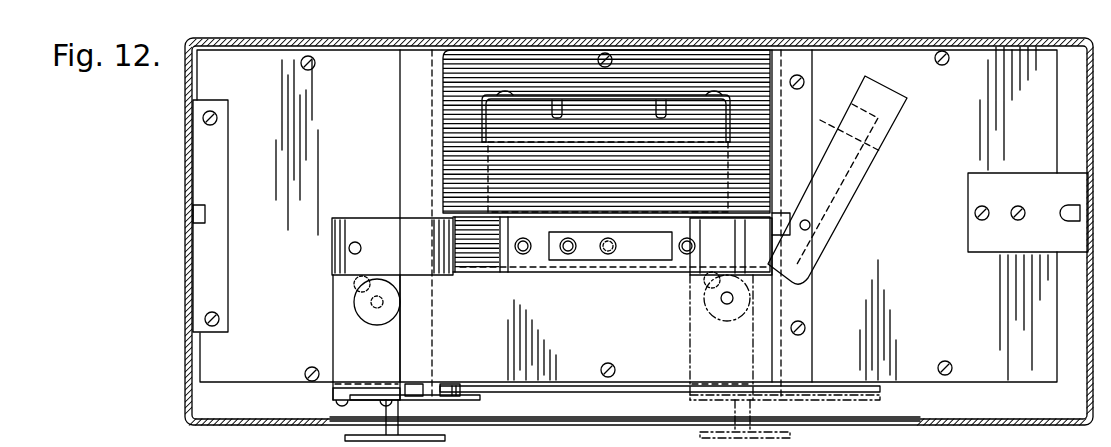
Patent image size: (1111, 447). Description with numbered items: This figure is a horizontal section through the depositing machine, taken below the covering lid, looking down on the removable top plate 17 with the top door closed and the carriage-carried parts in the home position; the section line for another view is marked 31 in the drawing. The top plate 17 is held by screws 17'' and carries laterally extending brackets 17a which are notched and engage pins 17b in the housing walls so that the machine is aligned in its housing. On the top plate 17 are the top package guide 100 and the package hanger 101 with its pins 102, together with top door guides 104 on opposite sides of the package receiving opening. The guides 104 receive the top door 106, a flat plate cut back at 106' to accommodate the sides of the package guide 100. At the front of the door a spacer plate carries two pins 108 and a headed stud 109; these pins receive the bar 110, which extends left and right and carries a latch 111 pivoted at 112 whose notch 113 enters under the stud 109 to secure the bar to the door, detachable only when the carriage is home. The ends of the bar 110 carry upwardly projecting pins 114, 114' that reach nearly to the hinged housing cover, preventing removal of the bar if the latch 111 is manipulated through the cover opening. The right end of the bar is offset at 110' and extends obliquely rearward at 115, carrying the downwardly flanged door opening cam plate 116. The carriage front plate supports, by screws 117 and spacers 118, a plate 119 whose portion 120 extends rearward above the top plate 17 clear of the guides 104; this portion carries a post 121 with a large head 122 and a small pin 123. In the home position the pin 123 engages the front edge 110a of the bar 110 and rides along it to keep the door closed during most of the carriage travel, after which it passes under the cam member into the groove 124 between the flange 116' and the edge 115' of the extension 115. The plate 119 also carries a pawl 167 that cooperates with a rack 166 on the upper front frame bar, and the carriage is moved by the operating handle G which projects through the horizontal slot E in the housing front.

The top plate 17 is at (639, 231).
The screws 17'' is at (614, 216).
The laterally extending brackets 17a is at (222, 190).
The pins 17b is at (205, 222).
The top door guides 104 is at (400, 150).
The top door 106 is at (606, 131).
The cut back 106' is at (611, 135).
The top package guide 100 is at (484, 102).
The package hanger 101 is at (585, 92).
The pins 102 is at (565, 116).
The bar 110 is at (611, 260).
The front edge 110a is at (634, 272).
The offset 110' is at (761, 208).
The pins 108 is at (525, 256).
The headed stud 109 is at (568, 256).
The pivot 112 is at (608, 236).
The notch 113 is at (570, 236).
The latch 111 is at (640, 236).
The upwardly projecting pin 114 is at (552, 236).
The upwardly projecting pin 114' is at (846, 232).
The door opening cam plate 116 is at (859, 180).
The oblique extension 115 is at (839, 172).
The flange 116' is at (904, 148).
The edge 115' is at (899, 166).
The groove 124 is at (850, 192).
The rearwardly extending portion 120 is at (348, 302).
The post 121 is at (376, 316).
The large head 122 is at (403, 300).
The small pin 123 is at (360, 276).
The plate 119 is at (482, 401).
The rack 166 is at (606, 394).
The spacers 118 is at (420, 376).
The pawl 167 is at (462, 382).
The screws 117 is at (336, 406).
The carriage operating handle G is at (445, 441).
The horizontal slot E is at (558, 421).
The section line 31 is at (652, 444).